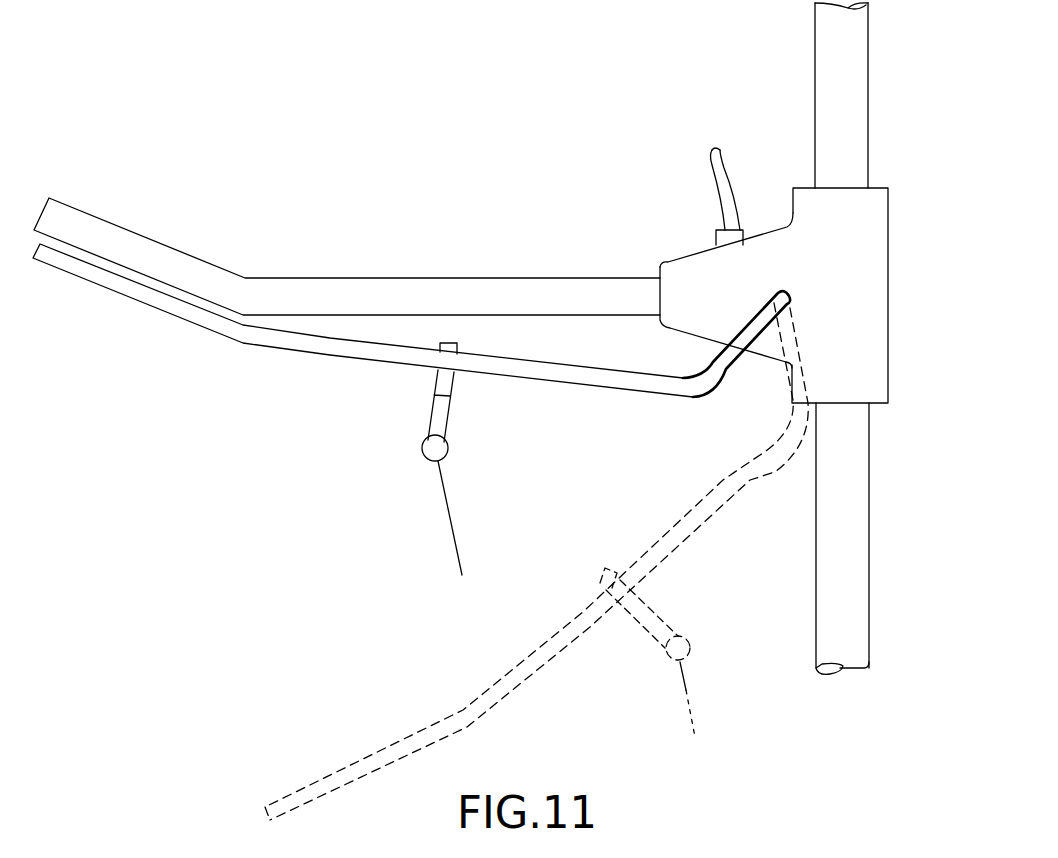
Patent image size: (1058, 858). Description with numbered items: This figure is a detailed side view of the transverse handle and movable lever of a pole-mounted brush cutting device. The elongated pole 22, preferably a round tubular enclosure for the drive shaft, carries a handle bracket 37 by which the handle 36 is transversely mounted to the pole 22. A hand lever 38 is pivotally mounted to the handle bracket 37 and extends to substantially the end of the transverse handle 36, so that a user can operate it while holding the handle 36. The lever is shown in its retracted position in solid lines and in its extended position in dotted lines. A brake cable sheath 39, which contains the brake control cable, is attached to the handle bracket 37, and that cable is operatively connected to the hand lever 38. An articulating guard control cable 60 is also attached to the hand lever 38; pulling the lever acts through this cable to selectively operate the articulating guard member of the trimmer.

The pole 22 is at (865, 73).
The handle 36 is at (305, 287).
The handle bracket 37 is at (890, 203).
The hand lever 38 is at (592, 378).
The brake cable sheath 39 is at (720, 183).
The articulating guard control cable 60 is at (455, 537).